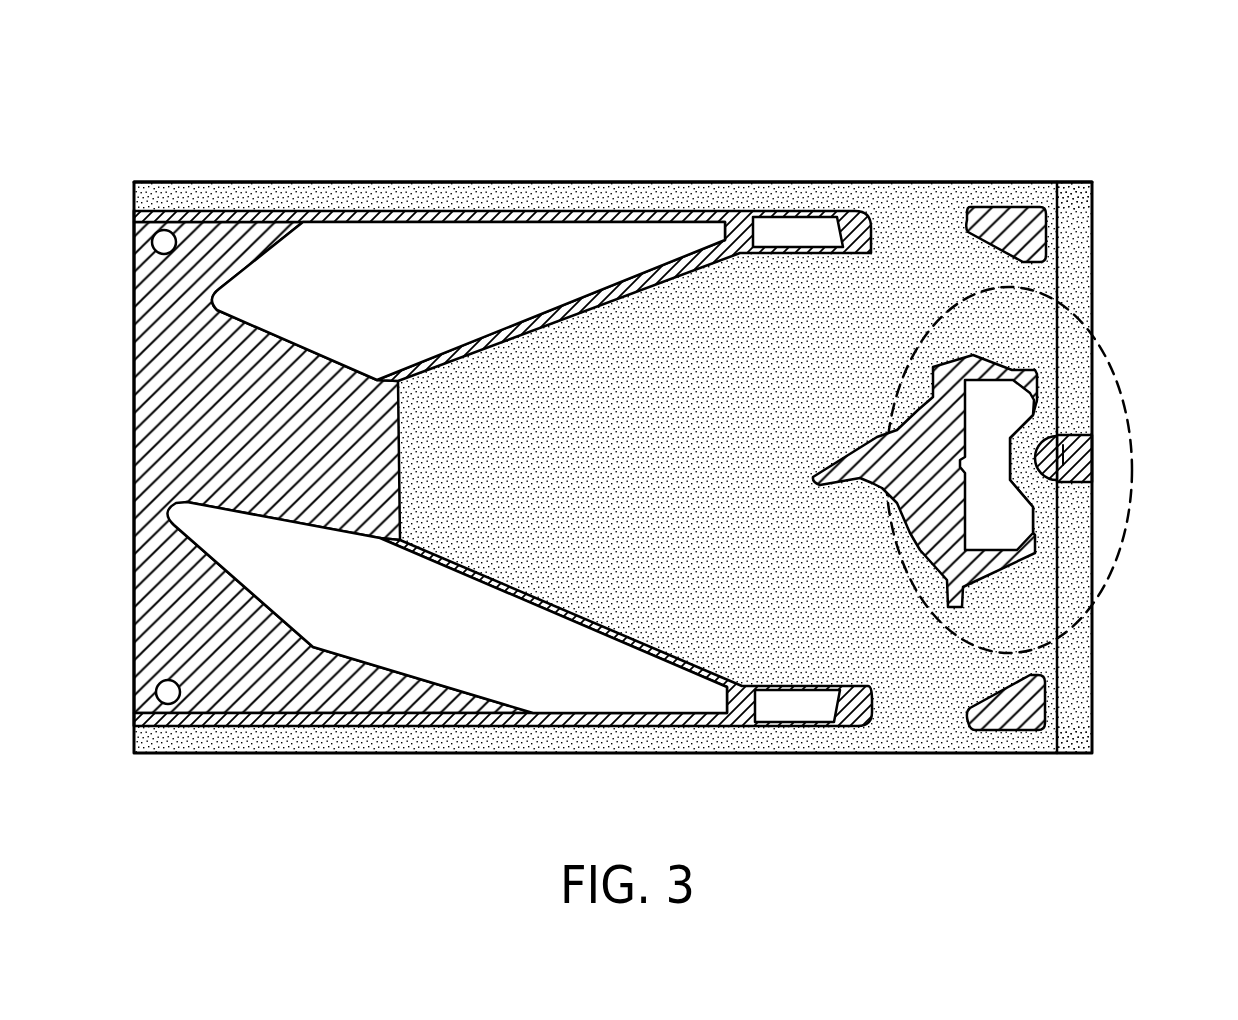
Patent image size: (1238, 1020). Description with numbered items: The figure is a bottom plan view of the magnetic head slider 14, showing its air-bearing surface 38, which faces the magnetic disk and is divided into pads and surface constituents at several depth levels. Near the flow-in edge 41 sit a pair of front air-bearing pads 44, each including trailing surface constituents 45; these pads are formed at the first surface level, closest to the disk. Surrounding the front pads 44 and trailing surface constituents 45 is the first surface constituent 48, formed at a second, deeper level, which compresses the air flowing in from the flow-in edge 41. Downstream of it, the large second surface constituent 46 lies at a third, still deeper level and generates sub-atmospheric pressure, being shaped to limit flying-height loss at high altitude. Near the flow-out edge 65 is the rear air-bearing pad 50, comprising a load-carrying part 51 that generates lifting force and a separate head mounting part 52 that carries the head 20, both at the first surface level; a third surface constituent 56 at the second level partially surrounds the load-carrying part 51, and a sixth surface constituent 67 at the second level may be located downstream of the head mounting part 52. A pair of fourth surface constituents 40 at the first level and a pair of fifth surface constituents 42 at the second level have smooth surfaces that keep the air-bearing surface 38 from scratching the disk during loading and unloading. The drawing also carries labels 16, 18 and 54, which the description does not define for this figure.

The magnetic head slider 14 is at (246, 92).
The outer skin layer 16 is at (695, 195).
The side wall 18 is at (1078, 203).
The head 20 is at (1122, 459).
The air-bearing surface 38 is at (188, 192).
The fourth surface constituents 40 is at (162, 242).
The flow-in edge 41 is at (134, 497).
The fifth surface constituents 42 is at (1028, 223).
The front air-bearing pads 44 is at (390, 309).
The trailing surface constituents 45 is at (807, 227).
The second surface constituent 46 is at (622, 469).
The first surface constituent 48 is at (290, 431).
The rear air-bearing pad 50 is at (948, 389).
The load-carrying part 51 is at (1015, 422).
The head mounting part 52 is at (1068, 434).
The detail region 54 is at (1102, 358).
The third surface constituent 56 is at (863, 440).
The flow-out edge 65 is at (1093, 703).
The sixth surface constituent 67 is at (1076, 468).